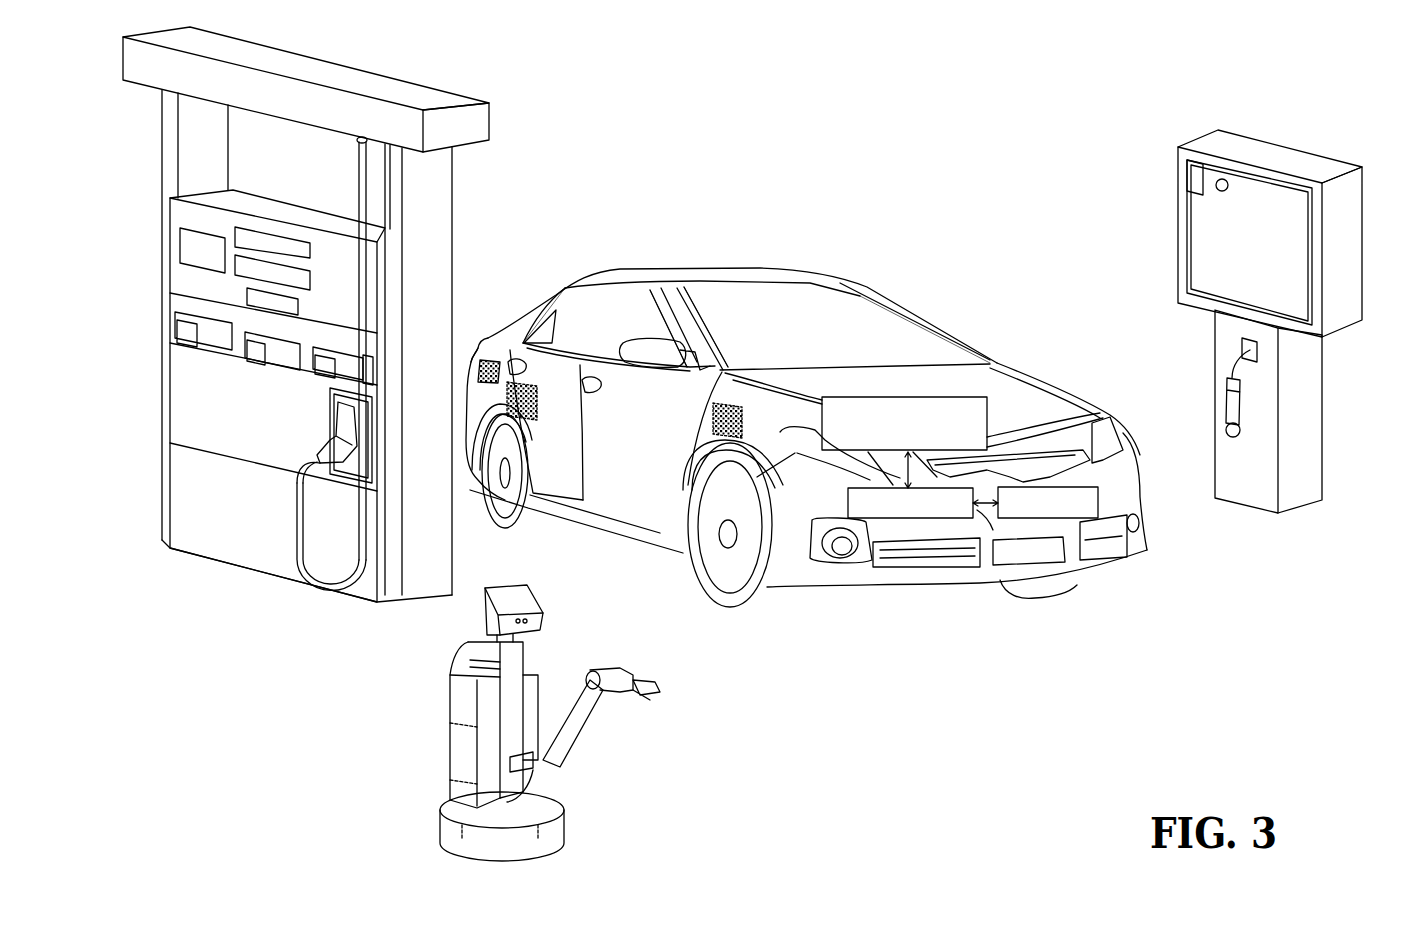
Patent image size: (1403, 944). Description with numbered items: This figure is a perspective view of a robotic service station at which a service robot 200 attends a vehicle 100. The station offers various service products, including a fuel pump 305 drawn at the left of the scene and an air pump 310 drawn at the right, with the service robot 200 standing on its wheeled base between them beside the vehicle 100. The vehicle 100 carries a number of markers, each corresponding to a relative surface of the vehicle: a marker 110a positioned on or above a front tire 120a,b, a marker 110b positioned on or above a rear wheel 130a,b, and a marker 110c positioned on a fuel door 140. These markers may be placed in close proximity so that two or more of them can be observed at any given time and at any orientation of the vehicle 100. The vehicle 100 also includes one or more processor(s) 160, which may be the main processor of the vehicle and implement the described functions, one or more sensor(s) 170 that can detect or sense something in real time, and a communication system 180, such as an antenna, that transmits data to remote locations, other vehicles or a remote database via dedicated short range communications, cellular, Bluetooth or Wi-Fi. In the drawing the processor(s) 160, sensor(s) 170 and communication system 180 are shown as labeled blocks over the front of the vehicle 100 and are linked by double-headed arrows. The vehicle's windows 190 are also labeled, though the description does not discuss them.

The vehicle 100 is at (777, 447).
The marker 110a is at (727, 402).
The marker 110b is at (530, 380).
The marker 110c is at (493, 357).
The front tire 120a,b is at (757, 603).
The rear wheel 130a,b is at (538, 518).
The fuel door 140 is at (477, 368).
The processor(s) 160 is at (895, 520).
The sensor(s) 170 is at (1045, 520).
The communication system 180 is at (950, 397).
The windows 190 is at (742, 305).
The service robot 200 is at (450, 748).
The fuel pump 305 is at (295, 445).
The air pump 310 is at (1222, 407).